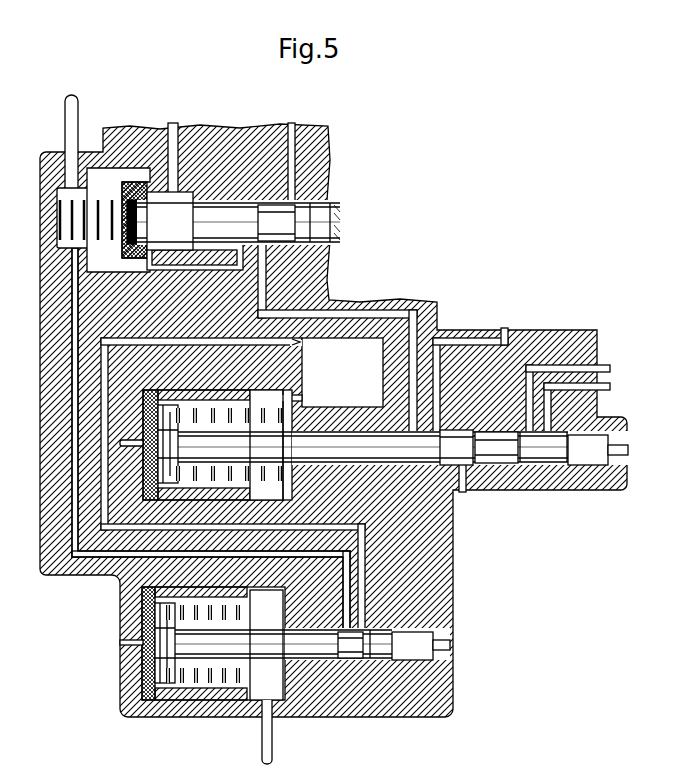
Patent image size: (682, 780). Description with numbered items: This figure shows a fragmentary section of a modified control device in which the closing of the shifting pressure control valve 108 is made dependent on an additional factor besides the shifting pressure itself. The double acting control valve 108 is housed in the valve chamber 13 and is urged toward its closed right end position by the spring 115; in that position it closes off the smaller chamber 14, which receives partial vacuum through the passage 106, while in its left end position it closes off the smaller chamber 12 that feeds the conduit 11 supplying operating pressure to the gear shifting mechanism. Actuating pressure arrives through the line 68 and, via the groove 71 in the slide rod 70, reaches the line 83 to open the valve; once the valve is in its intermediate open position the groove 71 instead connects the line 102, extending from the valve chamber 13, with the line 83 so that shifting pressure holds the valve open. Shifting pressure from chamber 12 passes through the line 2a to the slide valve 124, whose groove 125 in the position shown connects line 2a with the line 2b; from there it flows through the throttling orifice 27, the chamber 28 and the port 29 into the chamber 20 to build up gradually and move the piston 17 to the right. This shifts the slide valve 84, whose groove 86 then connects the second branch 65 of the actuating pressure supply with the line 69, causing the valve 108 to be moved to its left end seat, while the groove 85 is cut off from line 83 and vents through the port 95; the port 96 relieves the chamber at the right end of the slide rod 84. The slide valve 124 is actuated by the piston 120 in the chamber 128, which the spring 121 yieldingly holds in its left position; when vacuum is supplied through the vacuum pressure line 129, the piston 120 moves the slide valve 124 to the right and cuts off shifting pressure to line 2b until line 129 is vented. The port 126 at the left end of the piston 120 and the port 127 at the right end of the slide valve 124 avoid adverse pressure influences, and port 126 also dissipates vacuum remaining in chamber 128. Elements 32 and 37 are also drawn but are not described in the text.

The line 2a is at (72, 336).
The line 2b is at (207, 340).
The conduit 11 is at (72, 100).
The smaller chamber 12 is at (68, 240).
The valve chamber 13 is at (113, 268).
The smaller chamber 14 is at (188, 196).
The piston 17 is at (165, 490).
The chamber 20 is at (272, 487).
The throttling orifice 27 is at (292, 344).
The chamber 28 is at (342, 372).
The port 29 is at (292, 398).
The passage 32 is at (437, 362).
The pin 37 is at (138, 441).
The second branch 65 is at (548, 400).
The line 68 is at (291, 145).
The line 69 is at (528, 410).
The slide rod 70 is at (238, 222).
The groove 71 is at (272, 220).
The line 83 is at (298, 313).
The slide valve 84 is at (403, 444).
The groove 85 is at (418, 446).
The groove 86 is at (512, 448).
The port 95 is at (462, 480).
The port 96 is at (618, 452).
The line 102 is at (212, 268).
The passage 106 is at (172, 140).
The control valve 108 is at (135, 183).
The spring 115 is at (70, 218).
The piston 120 is at (182, 700).
The spring 121 is at (227, 606).
The slide valve 124 is at (312, 644).
The groove 125 is at (352, 646).
The port 126 is at (135, 641).
The port 127 is at (447, 645).
The chamber 128 is at (262, 692).
The vacuum pressure line 129 is at (272, 745).